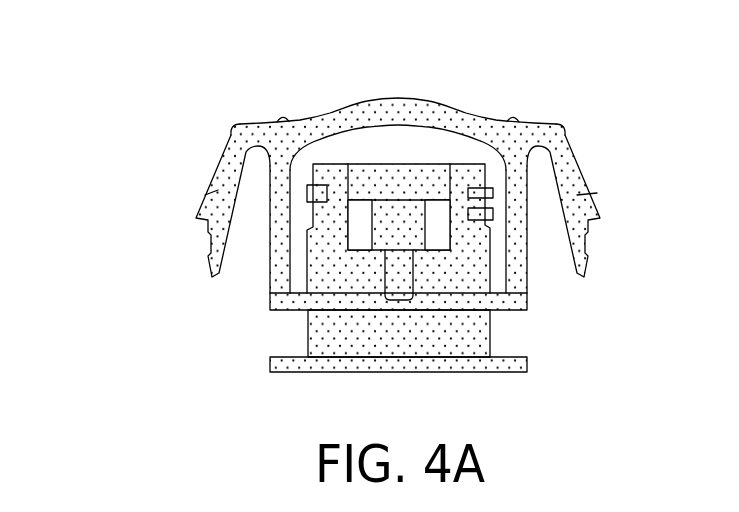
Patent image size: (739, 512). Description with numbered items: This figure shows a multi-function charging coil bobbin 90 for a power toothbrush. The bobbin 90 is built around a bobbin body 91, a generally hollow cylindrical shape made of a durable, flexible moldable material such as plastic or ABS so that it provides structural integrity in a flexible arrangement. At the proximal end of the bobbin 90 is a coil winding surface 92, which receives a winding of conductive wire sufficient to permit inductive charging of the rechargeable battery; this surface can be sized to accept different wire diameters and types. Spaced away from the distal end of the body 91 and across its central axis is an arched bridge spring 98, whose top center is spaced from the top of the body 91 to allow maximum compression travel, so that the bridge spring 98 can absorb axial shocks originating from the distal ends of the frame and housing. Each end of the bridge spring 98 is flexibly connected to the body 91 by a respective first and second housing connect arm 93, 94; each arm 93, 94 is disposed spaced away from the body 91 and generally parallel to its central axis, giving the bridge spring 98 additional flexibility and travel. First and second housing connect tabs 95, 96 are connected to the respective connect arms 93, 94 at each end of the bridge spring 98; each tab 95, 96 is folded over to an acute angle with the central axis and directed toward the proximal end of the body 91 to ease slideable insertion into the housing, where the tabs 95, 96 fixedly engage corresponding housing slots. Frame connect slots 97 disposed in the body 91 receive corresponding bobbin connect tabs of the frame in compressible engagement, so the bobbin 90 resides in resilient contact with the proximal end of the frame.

The multi-function charging coil bobbin 90 is at (98, 118).
The bobbin body 91 is at (323, 259).
The coil winding surface 92 is at (490, 330).
The first housing connect arm 93 is at (515, 170).
The second housing connect arm 94 is at (283, 167).
The first housing connect tab 95 is at (600, 212).
The second housing connect tab 96 is at (198, 212).
The frame connect slots 97 is at (362, 220).
The bridge spring 98 is at (397, 114).